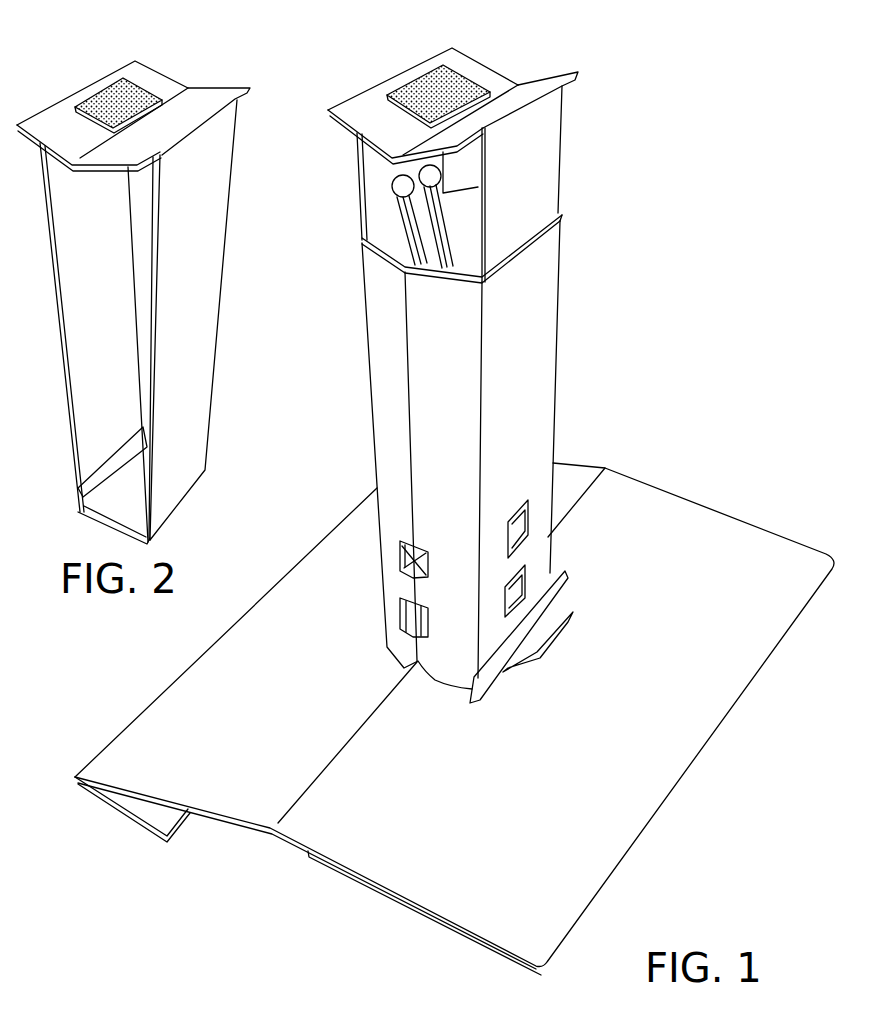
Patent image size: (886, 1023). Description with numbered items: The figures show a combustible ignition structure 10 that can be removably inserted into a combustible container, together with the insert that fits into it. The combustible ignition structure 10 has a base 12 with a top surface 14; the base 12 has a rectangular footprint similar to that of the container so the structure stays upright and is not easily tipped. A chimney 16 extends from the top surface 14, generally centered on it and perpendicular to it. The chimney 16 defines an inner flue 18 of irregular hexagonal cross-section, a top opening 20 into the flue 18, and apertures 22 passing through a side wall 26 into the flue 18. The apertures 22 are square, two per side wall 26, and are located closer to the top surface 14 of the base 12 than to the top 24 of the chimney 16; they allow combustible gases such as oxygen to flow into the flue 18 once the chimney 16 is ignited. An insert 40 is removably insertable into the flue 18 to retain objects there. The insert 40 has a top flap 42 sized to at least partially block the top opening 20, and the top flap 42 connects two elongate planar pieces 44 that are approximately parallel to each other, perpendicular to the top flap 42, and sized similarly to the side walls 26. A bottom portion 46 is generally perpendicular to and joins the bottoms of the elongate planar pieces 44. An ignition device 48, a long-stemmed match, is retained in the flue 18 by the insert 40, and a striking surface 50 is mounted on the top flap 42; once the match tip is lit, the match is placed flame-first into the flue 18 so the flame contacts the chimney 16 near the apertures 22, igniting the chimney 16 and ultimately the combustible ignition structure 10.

In FIG. 1, the combustible ignition structure 10 is at (454, 494).
In FIG. 1, the base 12 is at (454, 712).
In FIG. 1, the top surface 14 is at (720, 530).
In FIG. 1, the chimney 16 is at (472, 445).
In FIG. 1, the flue 18 is at (463, 253).
In FIG. 1, the top opening 20 is at (385, 248).
In FIG. 1, the apertures 22 is at (423, 552).
In FIG. 1, the top 24 is at (572, 217).
In FIG. 1, the side wall 26 is at (538, 387).
In FIG. 2, the insert 40 is at (158, 285).
In FIG. 1, the insert 40 is at (468, 147).
In FIG. 2, the top flap 42 is at (208, 105).
In FIG. 1, the top flap 42 is at (525, 90).
In FIG. 2, the elongate planar pieces 44 is at (113, 324).
In FIG. 1, the elongate planar pieces 44 is at (377, 163).
In FIG. 2, the bottom portion 46 is at (124, 520).
In FIG. 1, the ignition device 48 is at (400, 207).
In FIG. 2, the striking surface 50 is at (108, 98).
In FIG. 1, the striking surface 50 is at (422, 90).